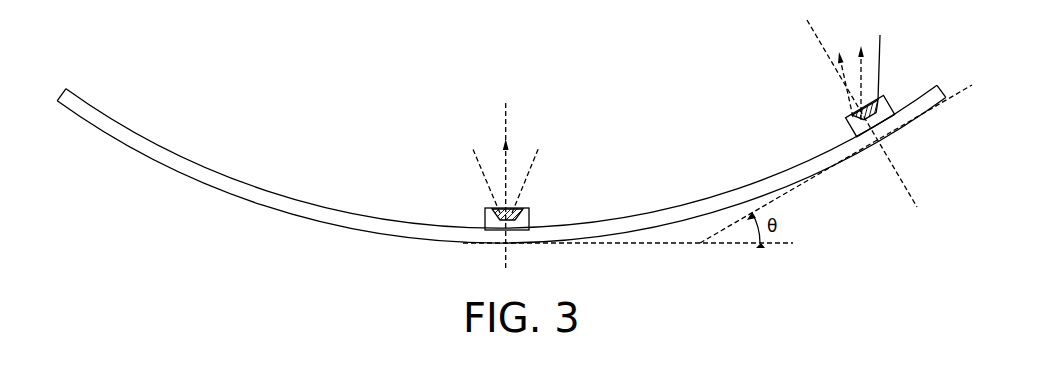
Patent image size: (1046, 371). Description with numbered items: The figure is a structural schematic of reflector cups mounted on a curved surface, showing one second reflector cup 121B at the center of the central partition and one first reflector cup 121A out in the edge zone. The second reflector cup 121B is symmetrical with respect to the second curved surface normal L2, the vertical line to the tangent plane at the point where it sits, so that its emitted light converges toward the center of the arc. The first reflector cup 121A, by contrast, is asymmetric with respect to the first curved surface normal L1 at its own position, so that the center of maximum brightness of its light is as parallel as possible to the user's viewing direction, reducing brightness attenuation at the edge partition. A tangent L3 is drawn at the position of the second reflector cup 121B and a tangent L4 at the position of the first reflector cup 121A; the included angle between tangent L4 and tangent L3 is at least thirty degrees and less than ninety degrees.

The first reflector cup 121A is at (888, 109).
The second reflector cup 121B is at (530, 216).
The first curved surface normal L1 is at (848, 112).
The second curved surface normal L2 is at (505, 185).
The tangent L3 is at (628, 257).
The tangent L4 is at (836, 164).